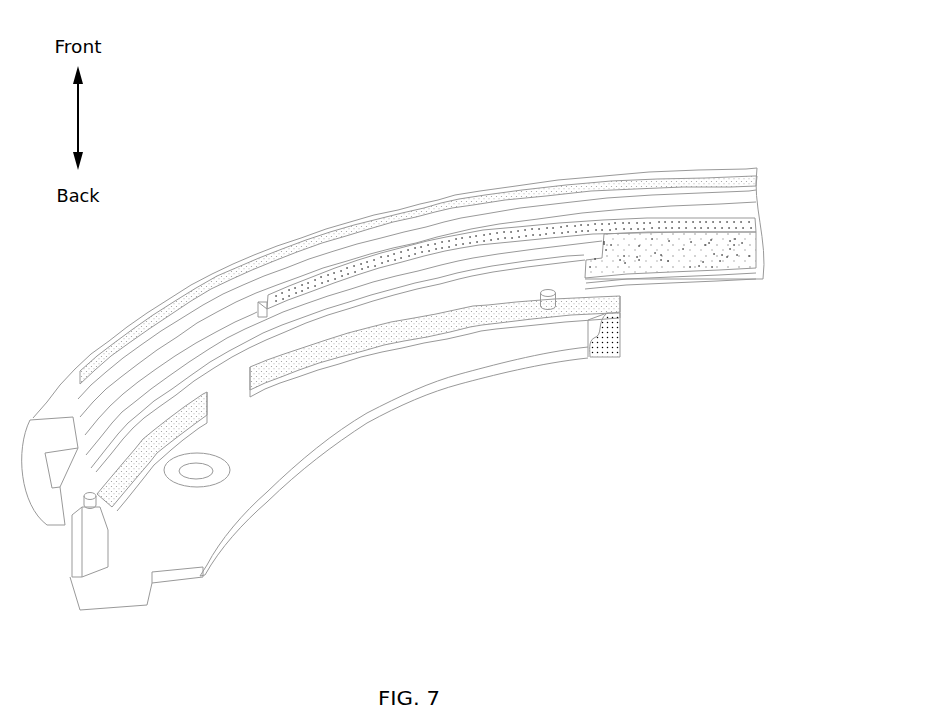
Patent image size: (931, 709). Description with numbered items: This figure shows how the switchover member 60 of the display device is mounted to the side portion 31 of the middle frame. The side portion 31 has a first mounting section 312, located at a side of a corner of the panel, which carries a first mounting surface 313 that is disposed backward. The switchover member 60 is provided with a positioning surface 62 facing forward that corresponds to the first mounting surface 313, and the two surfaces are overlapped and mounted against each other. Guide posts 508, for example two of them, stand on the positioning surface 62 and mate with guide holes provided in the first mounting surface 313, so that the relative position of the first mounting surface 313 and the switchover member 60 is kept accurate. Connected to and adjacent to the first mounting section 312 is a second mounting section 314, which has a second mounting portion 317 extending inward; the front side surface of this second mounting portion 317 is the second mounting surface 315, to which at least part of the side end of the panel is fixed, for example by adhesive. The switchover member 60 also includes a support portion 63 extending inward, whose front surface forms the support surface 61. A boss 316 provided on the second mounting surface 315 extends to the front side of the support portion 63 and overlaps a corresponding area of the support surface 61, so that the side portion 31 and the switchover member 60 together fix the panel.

The side portion 31 is at (622, 93).
The first mounting section 312 is at (471, 205).
The second mounting section 314 is at (633, 205).
The boss 316 is at (718, 232).
The second mounting surface 315 is at (735, 253).
The second mounting portion 317 is at (683, 297).
The switchover member 60 is at (383, 408).
The support surface 61 is at (277, 430).
The support portion 63 is at (222, 528).
The positioning surface 62 is at (142, 470).
The first mounting surface 313 is at (63, 453).
The guide posts 508 is at (88, 507).